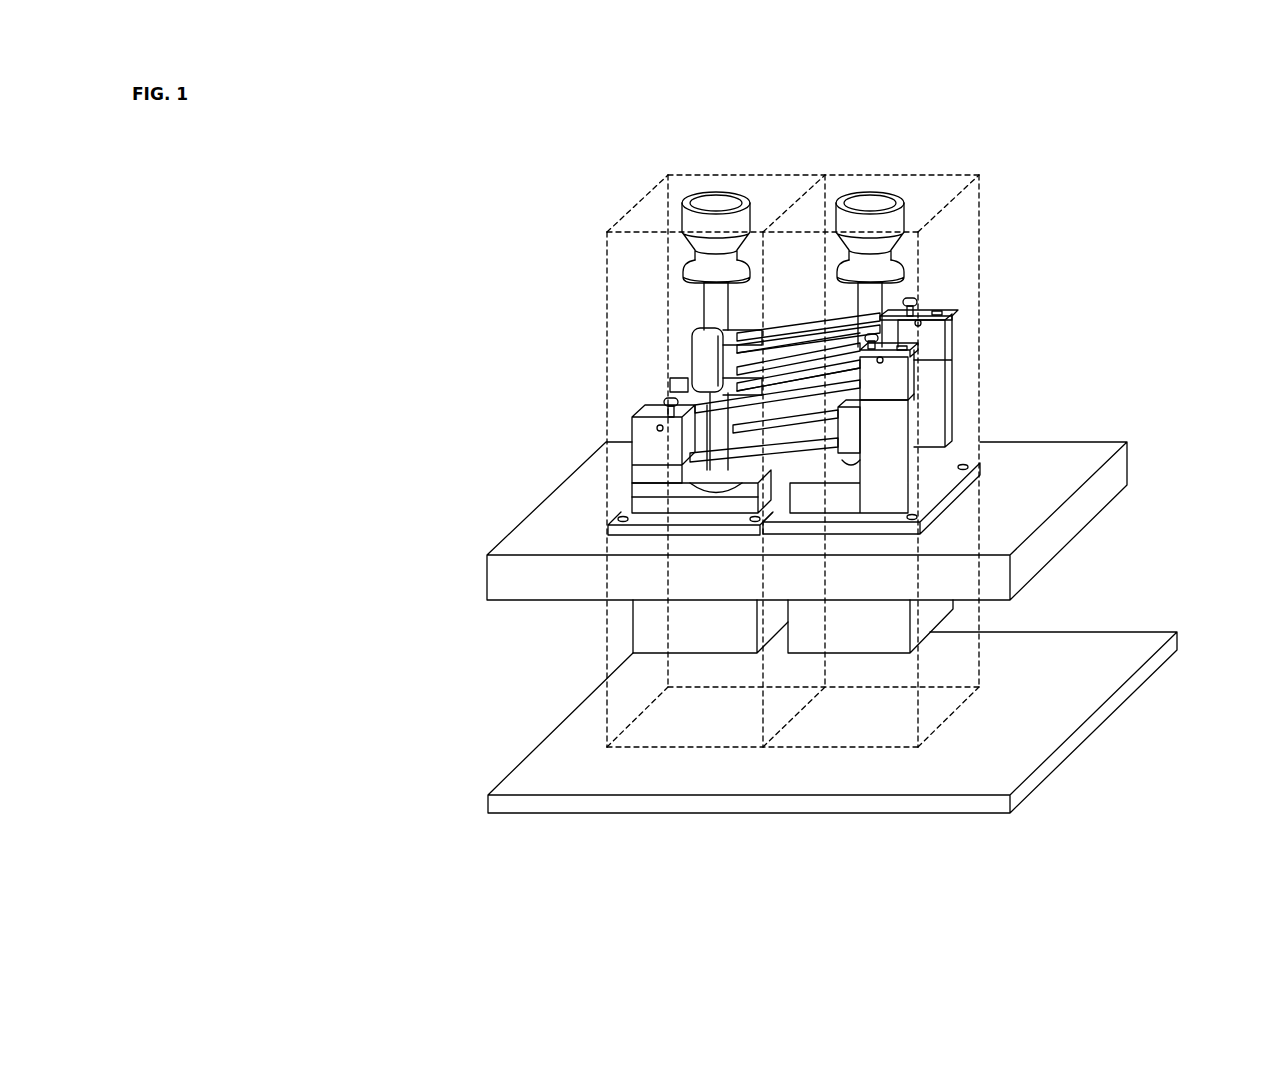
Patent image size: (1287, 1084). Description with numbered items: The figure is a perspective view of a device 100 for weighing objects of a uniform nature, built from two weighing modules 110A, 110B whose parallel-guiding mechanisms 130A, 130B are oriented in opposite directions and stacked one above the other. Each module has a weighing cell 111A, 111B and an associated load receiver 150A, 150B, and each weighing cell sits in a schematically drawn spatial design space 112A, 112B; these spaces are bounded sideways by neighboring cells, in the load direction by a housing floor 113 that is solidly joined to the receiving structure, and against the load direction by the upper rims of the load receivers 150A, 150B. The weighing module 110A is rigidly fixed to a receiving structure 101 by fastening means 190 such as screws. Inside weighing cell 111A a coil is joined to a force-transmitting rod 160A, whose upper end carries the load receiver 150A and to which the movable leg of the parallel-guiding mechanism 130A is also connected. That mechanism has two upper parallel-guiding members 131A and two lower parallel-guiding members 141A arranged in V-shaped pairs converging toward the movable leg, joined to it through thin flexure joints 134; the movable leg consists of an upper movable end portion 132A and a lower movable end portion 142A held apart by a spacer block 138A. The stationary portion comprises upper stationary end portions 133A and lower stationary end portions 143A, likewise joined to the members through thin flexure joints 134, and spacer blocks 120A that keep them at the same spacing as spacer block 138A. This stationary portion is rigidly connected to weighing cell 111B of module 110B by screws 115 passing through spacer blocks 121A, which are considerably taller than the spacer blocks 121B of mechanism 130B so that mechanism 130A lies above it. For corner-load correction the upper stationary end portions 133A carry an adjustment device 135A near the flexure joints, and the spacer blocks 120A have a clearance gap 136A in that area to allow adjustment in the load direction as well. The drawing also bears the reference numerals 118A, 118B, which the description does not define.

The device 100 is at (545, 439).
The receiving structure 101 is at (1032, 497).
The weighing module 110A is at (713, 676).
The weighing module 110B is at (865, 675).
The weighing cell 111A is at (683, 630).
The weighing cell 111B is at (883, 618).
The spatial design space 112A is at (632, 687).
The spatial design space 112B is at (945, 662).
The housing floor 113 is at (1050, 713).
The screws 115 is at (957, 345).
The mounting plate A 118A is at (650, 480).
The mounting plate B 118B is at (880, 485).
The spacer blocks 120A is at (915, 363).
The spacer blocks 121A is at (890, 445).
The spacer blocks 121B is at (655, 476).
The parallel-guiding mechanism 130A is at (793, 273).
The parallel-guiding mechanism 130B is at (728, 485).
The upper parallel-guiding members 131A is at (805, 345).
The upper movable end portion 132A is at (695, 335).
The upper stationary end portions 133A is at (920, 352).
The thin flexure joints 134 is at (737, 330).
The adjustment device 135A is at (922, 306).
The clearance gap 136A is at (937, 312).
The spacer block 138A is at (703, 362).
The lower parallel-guiding members 141A is at (785, 360).
The lower movable end portion 142A is at (664, 388).
The lower stationary end portions 143A is at (910, 380).
The load receiver 150A is at (697, 220).
The load receiver 150B is at (870, 220).
The force-transmitting rod 160A is at (760, 325).
The fastening means 190 is at (970, 465).